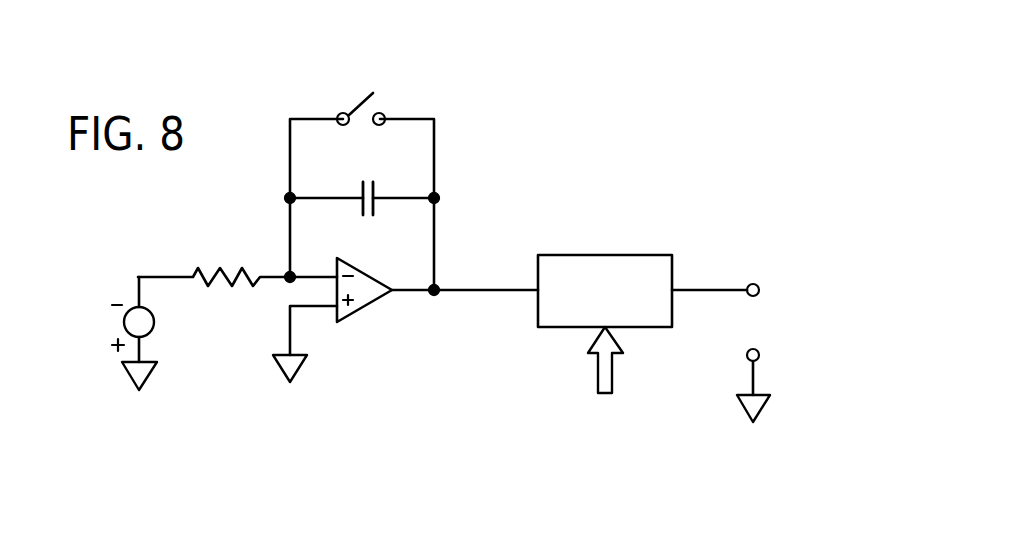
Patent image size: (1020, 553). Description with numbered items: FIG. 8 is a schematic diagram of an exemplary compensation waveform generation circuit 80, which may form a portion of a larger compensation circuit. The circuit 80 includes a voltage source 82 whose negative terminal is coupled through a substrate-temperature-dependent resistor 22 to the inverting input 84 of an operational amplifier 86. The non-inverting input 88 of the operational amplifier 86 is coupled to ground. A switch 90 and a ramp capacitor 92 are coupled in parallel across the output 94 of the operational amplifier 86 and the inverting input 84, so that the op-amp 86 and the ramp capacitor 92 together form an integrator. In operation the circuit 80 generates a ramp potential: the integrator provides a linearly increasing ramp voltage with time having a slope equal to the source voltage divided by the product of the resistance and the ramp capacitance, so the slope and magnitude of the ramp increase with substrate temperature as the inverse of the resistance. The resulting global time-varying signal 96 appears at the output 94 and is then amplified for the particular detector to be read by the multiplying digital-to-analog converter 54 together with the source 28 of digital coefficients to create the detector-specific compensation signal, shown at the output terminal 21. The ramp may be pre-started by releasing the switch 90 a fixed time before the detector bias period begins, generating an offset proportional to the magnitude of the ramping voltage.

The compensation waveform generation circuit 80 is at (511, 170).
The switch S1 90 is at (360, 100).
The capacitor Cramp 92 is at (375, 190).
The resistor R1(Tsub) 22 is at (213, 283).
The voltage source V1 82 is at (155, 322).
The inverting input 84 is at (310, 274).
The operational amplifier 86 is at (368, 268).
The non-inverting input 88 is at (315, 308).
The output 94 is at (452, 288).
The global time-varying signal V'comp 96 is at (492, 342).
The MDAC(N) 54 is at (617, 255).
The source 28 is at (665, 427).
The output terminal Vcomp(N) 21 is at (754, 283).